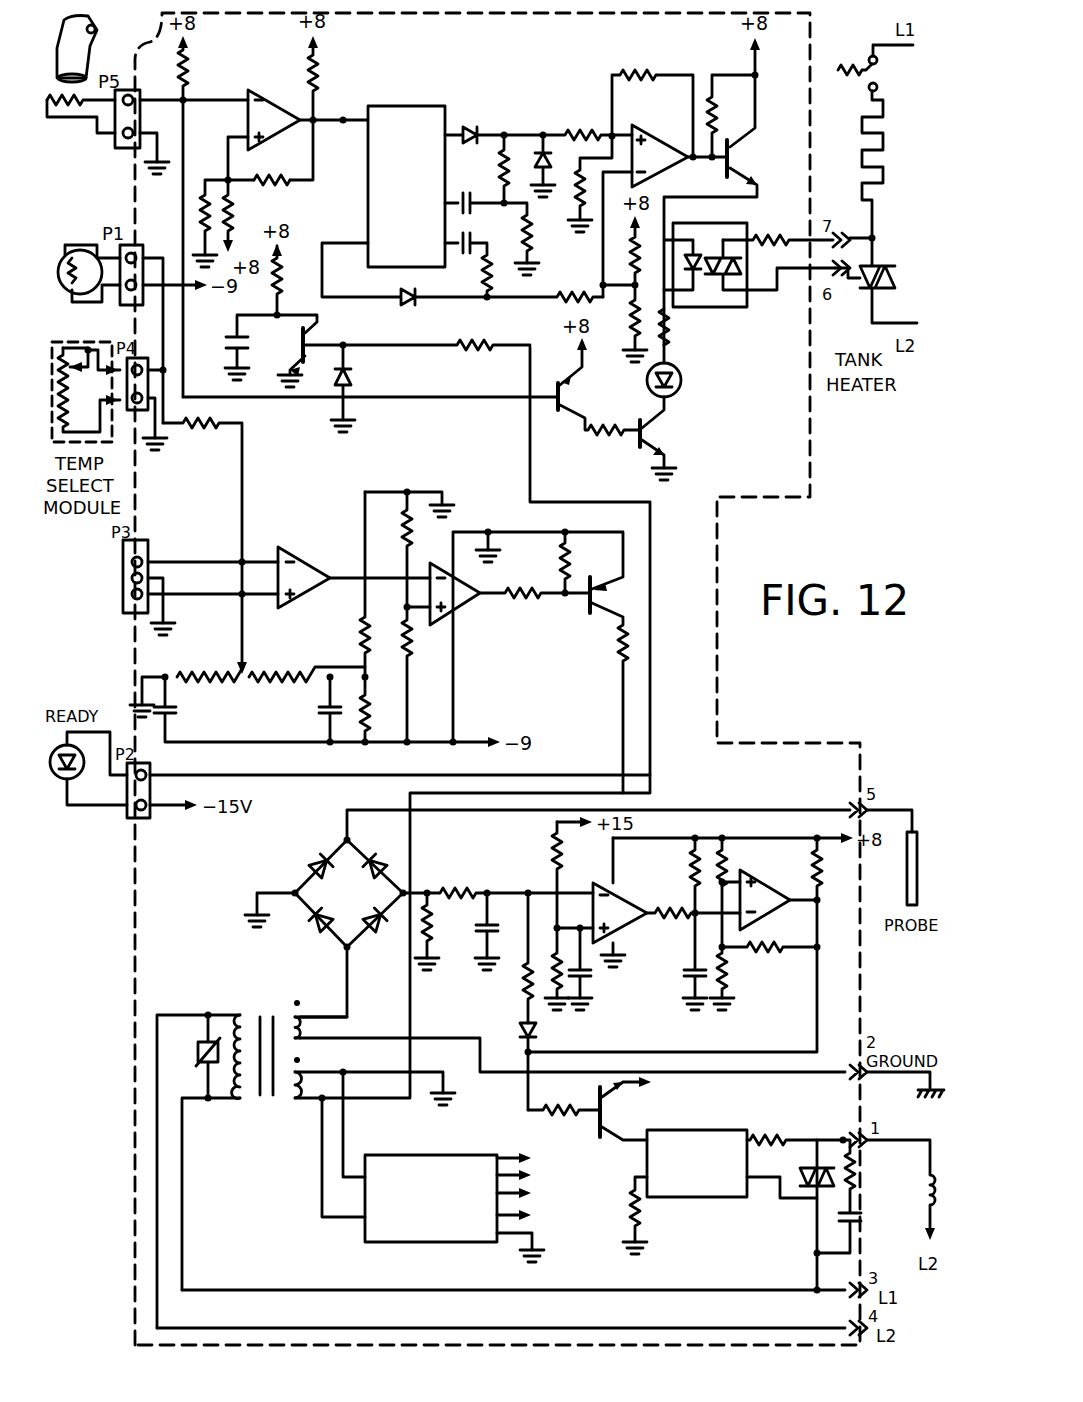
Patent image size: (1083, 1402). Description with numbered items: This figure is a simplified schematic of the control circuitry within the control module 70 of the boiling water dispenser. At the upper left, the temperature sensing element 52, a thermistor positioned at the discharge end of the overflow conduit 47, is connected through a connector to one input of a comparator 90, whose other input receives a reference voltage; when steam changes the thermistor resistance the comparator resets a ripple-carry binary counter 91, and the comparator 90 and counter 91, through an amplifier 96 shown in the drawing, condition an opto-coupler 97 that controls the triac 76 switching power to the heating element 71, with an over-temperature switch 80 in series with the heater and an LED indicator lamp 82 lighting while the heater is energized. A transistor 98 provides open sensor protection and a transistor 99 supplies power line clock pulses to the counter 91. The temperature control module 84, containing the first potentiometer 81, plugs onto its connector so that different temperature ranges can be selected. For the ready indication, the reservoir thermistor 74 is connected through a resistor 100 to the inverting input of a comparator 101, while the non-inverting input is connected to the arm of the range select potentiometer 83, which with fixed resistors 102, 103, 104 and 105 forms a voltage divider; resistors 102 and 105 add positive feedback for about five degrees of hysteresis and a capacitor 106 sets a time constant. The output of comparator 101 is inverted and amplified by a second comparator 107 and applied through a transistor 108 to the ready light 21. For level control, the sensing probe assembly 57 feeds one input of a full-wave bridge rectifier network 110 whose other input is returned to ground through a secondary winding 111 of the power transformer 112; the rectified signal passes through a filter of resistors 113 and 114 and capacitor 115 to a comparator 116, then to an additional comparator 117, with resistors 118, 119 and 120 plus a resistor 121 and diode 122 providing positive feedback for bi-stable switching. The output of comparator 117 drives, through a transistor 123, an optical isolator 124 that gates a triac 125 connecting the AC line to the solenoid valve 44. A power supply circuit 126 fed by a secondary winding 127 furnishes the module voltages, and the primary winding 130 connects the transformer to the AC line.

The ready light 21 is at (80, 770).
The solenoid valve 44 is at (925, 1205).
The conduit 47 is at (97, 35).
The temperature sensing element 52 is at (57, 108).
The sensing probe assembly 57 is at (905, 878).
The control module 70 is at (718, 683).
The heating element 71 is at (862, 136).
The thermistor 74 is at (62, 255).
The triac 76 is at (882, 270).
The over-temperature switch 80 is at (860, 63).
The first potentiometer 81 is at (63, 348).
The LED indicator lamp 82 is at (682, 380).
The second potentiometer 83 is at (250, 672).
The temperature control module 84 is at (85, 375).
The comparator 90 is at (275, 105).
The ripple-carry binary counter 91 is at (400, 106).
The operational amplifier 96 is at (662, 133).
The opto-coupler 97 is at (718, 307).
The transistor 98 is at (92, 330).
The transistor 99 is at (300, 345).
The resistor 100 is at (200, 428).
The comparator 101 is at (306, 550).
The fixed resistor 102 is at (365, 630).
The fixed resistor 103 is at (300, 672).
The fixed resistor 104 is at (185, 672).
The fixed resistor 105 is at (372, 735).
The capacitor 106 is at (320, 715).
The second comparator 107 is at (455, 605).
The transistor 108 is at (580, 608).
The full-wave bridge rectifier network 110 is at (366, 893).
The secondary winding 111 is at (305, 1030).
The power transformer 112 is at (262, 1017).
The resistor 113 is at (432, 945).
The resistor 114 is at (460, 885).
The capacitor 115 is at (490, 945).
The comparator 116 is at (620, 898).
The additional comparator 117 is at (762, 905).
The resistor 118 is at (765, 955).
The resistor 119 is at (728, 975).
The resistor 120 is at (728, 862).
The resistor 121 is at (525, 965).
The diode 122 is at (537, 1033).
The transistor 123 is at (598, 1097).
The optical isolator 124 is at (697, 1130).
The triac 125 is at (812, 1165).
The power supply circuit 126 is at (415, 1155).
The secondary winding 127 is at (290, 1085).
The primary winding 130 is at (222, 1068).